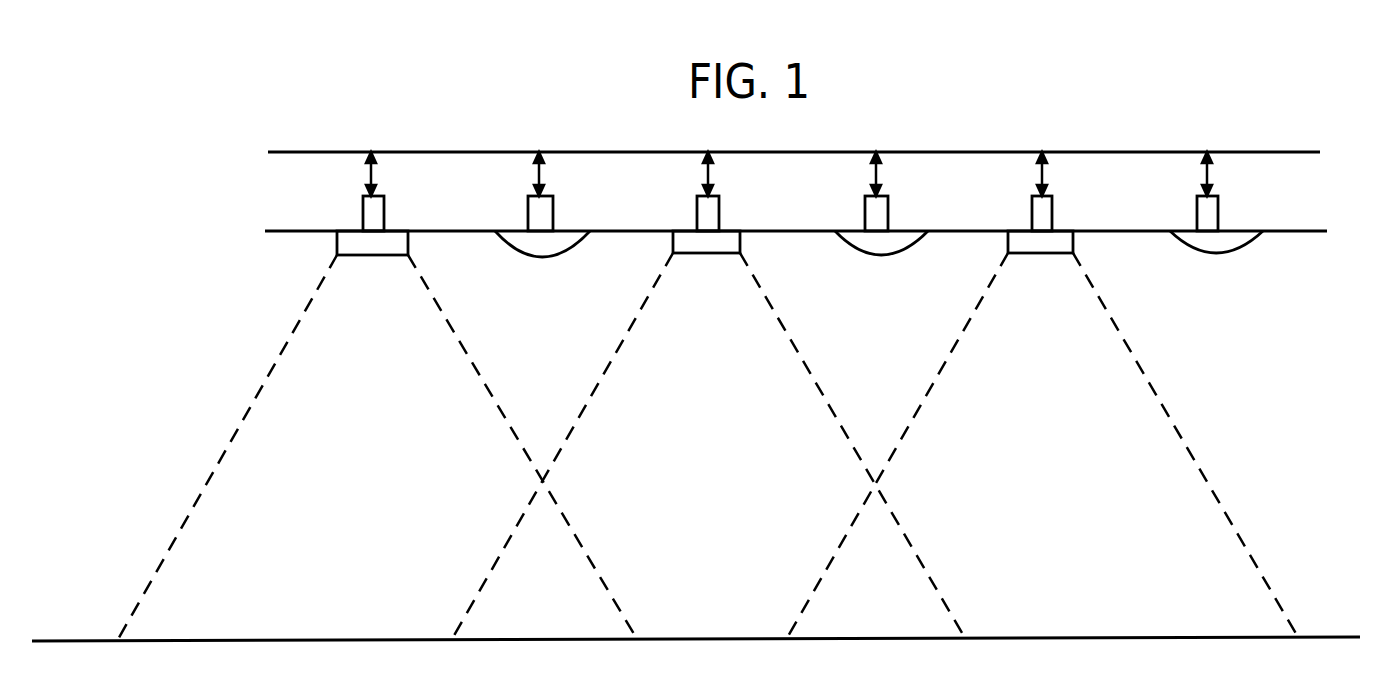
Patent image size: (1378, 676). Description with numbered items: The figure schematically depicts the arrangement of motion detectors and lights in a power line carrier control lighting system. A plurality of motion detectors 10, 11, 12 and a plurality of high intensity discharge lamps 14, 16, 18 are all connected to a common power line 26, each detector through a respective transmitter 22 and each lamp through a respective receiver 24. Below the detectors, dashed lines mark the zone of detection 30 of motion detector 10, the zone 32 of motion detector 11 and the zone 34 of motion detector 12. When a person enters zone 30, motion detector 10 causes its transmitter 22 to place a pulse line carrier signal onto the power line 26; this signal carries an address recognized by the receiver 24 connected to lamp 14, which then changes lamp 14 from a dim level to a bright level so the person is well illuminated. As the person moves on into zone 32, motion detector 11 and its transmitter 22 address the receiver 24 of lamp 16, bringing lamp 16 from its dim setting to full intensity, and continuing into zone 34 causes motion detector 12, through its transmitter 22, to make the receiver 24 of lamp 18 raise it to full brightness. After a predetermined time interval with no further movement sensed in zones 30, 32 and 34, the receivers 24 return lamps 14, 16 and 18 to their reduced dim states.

The motion detector 10 is at (408, 235).
The motion detector 11 is at (740, 235).
The motion detector 12 is at (1073, 235).
The high intensity discharge lamp 14 is at (584, 242).
The high intensity discharge lamp 16 is at (921, 242).
The high intensity discharge lamp 18 is at (1255, 242).
The transmitter 22 is at (384, 207).
The receiver 24 is at (553, 207).
The power line 26 is at (302, 152).
The zone of detection 30 is at (368, 490).
The zone 32 is at (745, 490).
The zone 34 is at (1075, 489).